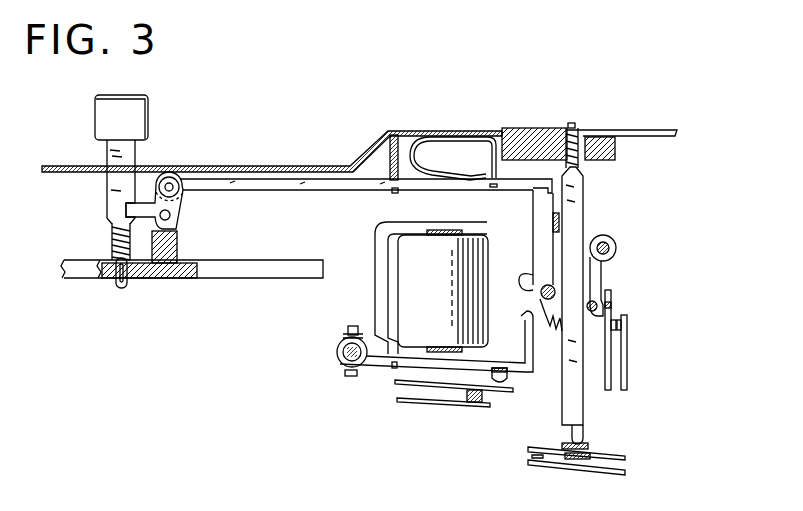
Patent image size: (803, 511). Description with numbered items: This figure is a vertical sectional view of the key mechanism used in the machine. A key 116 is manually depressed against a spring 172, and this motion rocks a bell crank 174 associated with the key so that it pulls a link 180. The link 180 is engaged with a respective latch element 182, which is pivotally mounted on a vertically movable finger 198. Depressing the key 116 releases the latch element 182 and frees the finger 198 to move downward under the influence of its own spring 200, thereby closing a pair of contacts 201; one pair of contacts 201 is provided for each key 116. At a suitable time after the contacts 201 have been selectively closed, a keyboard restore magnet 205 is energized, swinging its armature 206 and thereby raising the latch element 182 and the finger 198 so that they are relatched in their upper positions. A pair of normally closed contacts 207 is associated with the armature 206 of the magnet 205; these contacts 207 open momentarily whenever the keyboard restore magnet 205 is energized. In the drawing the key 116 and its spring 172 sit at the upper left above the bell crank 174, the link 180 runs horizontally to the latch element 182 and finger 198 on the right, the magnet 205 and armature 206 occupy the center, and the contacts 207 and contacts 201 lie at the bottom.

The key 116 is at (128, 102).
The spring 172 is at (112, 233).
The bell crank 174 is at (177, 207).
The link 180 is at (322, 190).
The latch element 182 is at (535, 206).
The finger 198 is at (584, 206).
The spring 200 is at (581, 169).
The contacts 201 is at (528, 455).
The keyboard restore magnet 205 is at (441, 292).
The armature 206 is at (519, 366).
The normally closed contacts 207 is at (468, 392).